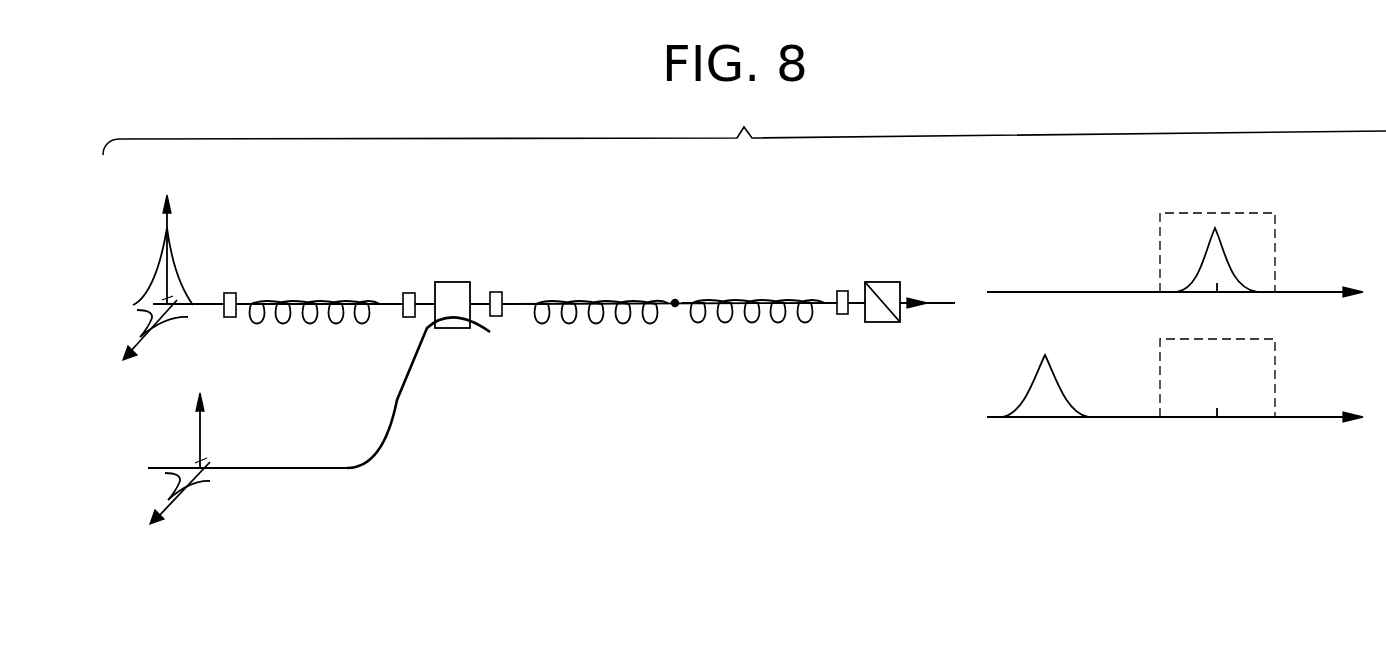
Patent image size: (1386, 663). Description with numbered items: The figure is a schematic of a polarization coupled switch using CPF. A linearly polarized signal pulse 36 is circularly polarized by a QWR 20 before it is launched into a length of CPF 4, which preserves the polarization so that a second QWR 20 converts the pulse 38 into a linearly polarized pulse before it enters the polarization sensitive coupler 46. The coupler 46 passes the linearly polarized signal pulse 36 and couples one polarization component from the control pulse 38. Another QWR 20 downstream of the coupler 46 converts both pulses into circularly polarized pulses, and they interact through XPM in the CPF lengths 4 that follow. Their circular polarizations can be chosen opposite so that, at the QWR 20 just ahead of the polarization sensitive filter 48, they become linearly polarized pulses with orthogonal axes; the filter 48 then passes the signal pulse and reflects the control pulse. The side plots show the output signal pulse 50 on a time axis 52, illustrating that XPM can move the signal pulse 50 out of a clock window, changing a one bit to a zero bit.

The signal pulse 36 is at (178, 252).
The control pulse 38 is at (205, 487).
The QWR 20 is at (230, 317).
The CPF 4 is at (321, 318).
The polarization sensitive coupler 46 is at (452, 328).
The polarization sensitive filter 48 is at (880, 322).
The output signal pulse 50 is at (1233, 267).
The time axis 52 is at (1285, 293).